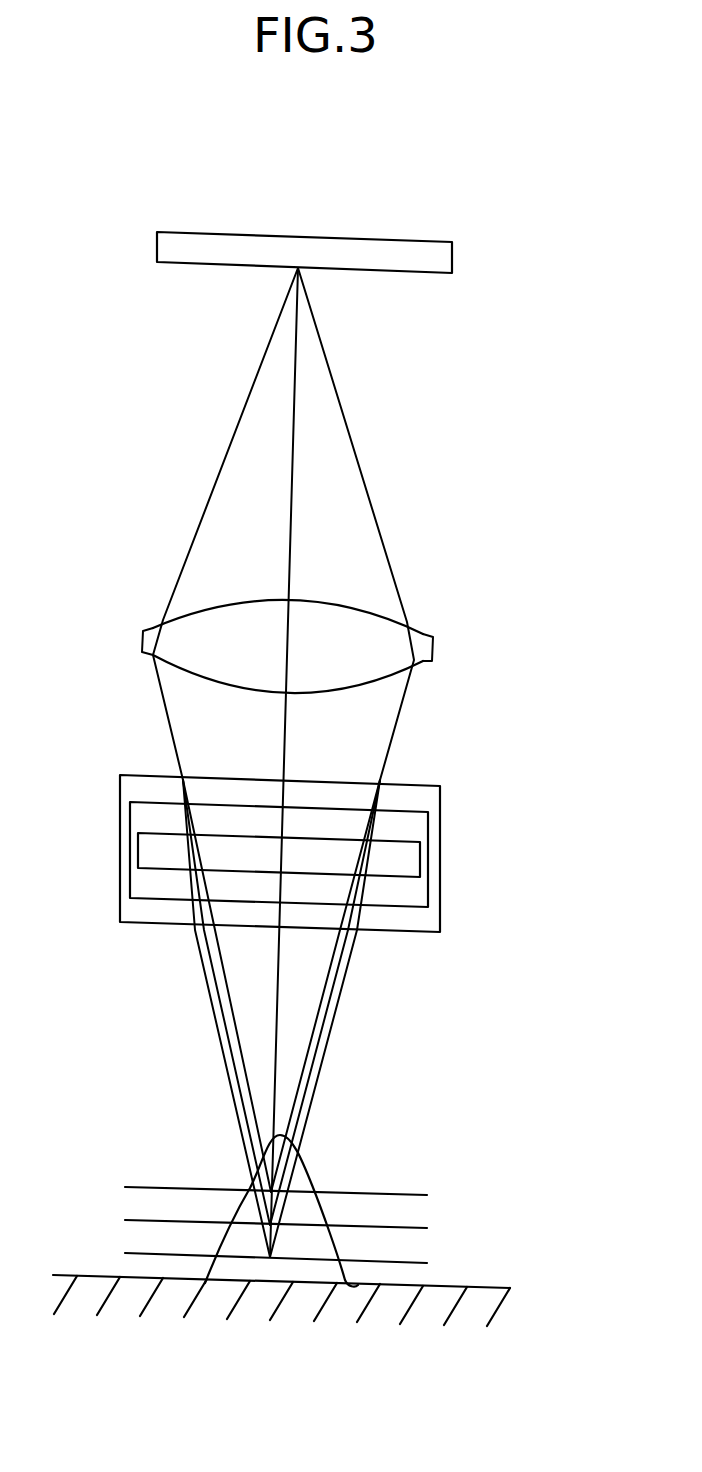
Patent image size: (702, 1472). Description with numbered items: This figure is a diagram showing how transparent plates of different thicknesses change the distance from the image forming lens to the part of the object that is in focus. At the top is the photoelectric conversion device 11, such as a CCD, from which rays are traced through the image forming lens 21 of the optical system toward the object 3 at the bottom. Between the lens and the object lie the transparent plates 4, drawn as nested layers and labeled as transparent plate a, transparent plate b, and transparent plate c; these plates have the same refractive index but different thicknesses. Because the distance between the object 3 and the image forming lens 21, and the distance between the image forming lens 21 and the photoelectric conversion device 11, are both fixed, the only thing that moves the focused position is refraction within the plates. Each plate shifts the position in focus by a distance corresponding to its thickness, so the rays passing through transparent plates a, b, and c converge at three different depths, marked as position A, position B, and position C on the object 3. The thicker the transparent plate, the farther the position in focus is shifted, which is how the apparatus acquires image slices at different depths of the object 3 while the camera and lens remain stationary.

The photoelectric conversion device 11 is at (388, 253).
The image forming lens 21 is at (422, 640).
The transparent plates 4 is at (344, 840).
The transparent plate a is at (440, 795).
The transparent plate b is at (428, 840).
The transparent plate c is at (322, 856).
The object 3 is at (307, 1183).
The position in focus A is at (292, 1190).
The position in focus B is at (292, 1230).
The position in focus C is at (292, 1266).